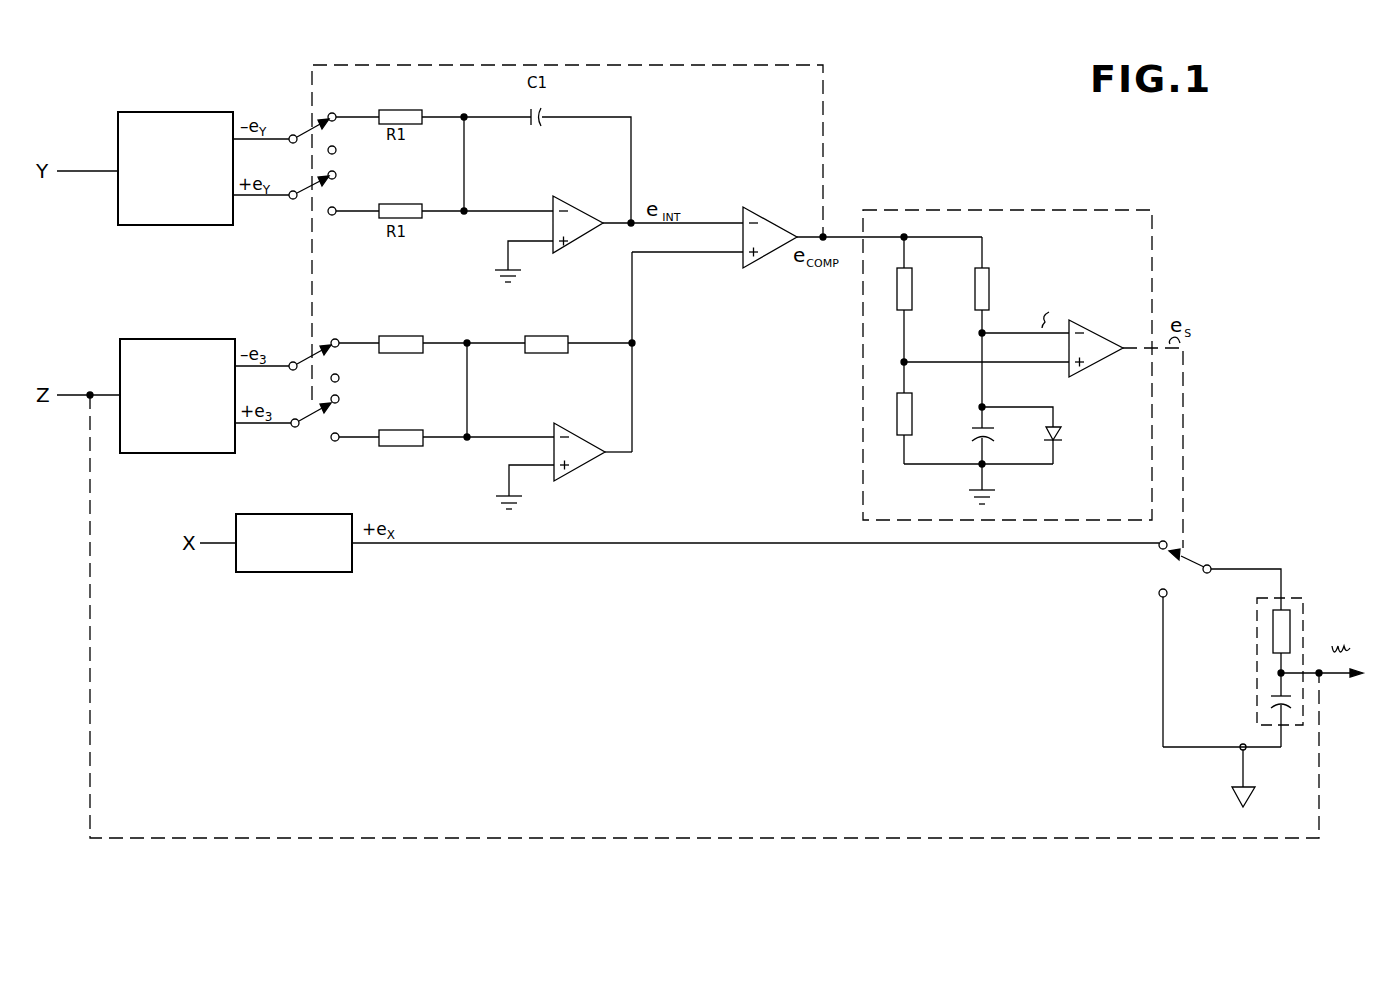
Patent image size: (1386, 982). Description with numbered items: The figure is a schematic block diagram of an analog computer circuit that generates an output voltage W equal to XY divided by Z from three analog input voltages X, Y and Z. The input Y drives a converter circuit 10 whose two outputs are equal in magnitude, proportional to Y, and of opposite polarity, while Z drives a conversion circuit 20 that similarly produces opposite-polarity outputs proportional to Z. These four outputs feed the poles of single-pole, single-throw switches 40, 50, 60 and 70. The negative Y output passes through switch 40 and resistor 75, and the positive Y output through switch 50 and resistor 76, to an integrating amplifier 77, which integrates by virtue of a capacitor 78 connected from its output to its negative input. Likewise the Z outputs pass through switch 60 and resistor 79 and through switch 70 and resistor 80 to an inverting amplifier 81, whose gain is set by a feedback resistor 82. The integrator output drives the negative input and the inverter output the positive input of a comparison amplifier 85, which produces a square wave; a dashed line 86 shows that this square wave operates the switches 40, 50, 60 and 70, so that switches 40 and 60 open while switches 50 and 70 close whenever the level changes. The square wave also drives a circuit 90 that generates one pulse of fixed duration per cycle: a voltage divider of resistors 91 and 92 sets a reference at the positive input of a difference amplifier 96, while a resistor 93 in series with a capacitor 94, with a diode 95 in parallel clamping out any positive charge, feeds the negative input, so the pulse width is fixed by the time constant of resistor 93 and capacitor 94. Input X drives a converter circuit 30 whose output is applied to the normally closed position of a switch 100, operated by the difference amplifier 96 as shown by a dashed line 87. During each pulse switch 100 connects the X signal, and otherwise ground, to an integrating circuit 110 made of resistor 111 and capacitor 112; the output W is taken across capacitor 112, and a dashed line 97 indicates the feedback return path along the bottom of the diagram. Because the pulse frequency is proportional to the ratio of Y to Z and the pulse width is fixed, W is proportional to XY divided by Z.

The converter circuit 10 is at (198, 114).
The conversion circuit 20 is at (183, 341).
The converter circuit 30 is at (273, 516).
The single-pole, single-throw switch 40 is at (320, 118).
The single-pole, single-throw switch 50 is at (336, 195).
The single-pole, single-throw switch 60 is at (321, 334).
The single-pole, single-throw switch 70 is at (338, 424).
The resistor 75 is at (407, 103).
The resistor 76 is at (405, 206).
The integrating amplifier 77 is at (585, 208).
The capacitor 78 is at (544, 116).
The resistor 79 is at (407, 334).
The resistor 80 is at (391, 429).
The inverting amplifier 81 is at (591, 435).
The resistor 82 is at (566, 333).
The comparison amplifier 85 is at (777, 216).
The dashed line 86 is at (825, 125).
The dashed line 87 is at (1184, 453).
The circuit 90 is at (1080, 249).
The resistor 91 is at (912, 298).
The resistor 92 is at (910, 424).
The resistor 93 is at (995, 298).
The capacitor 94 is at (972, 436).
The diode 95 is at (1062, 438).
The difference amplifier 96 is at (1093, 325).
The feedback connection 97 is at (968, 840).
The switch 100 is at (1160, 562).
The integrating circuit 110 is at (1254, 658).
The resistor 111 is at (1270, 632).
The capacitor 112 is at (1268, 699).